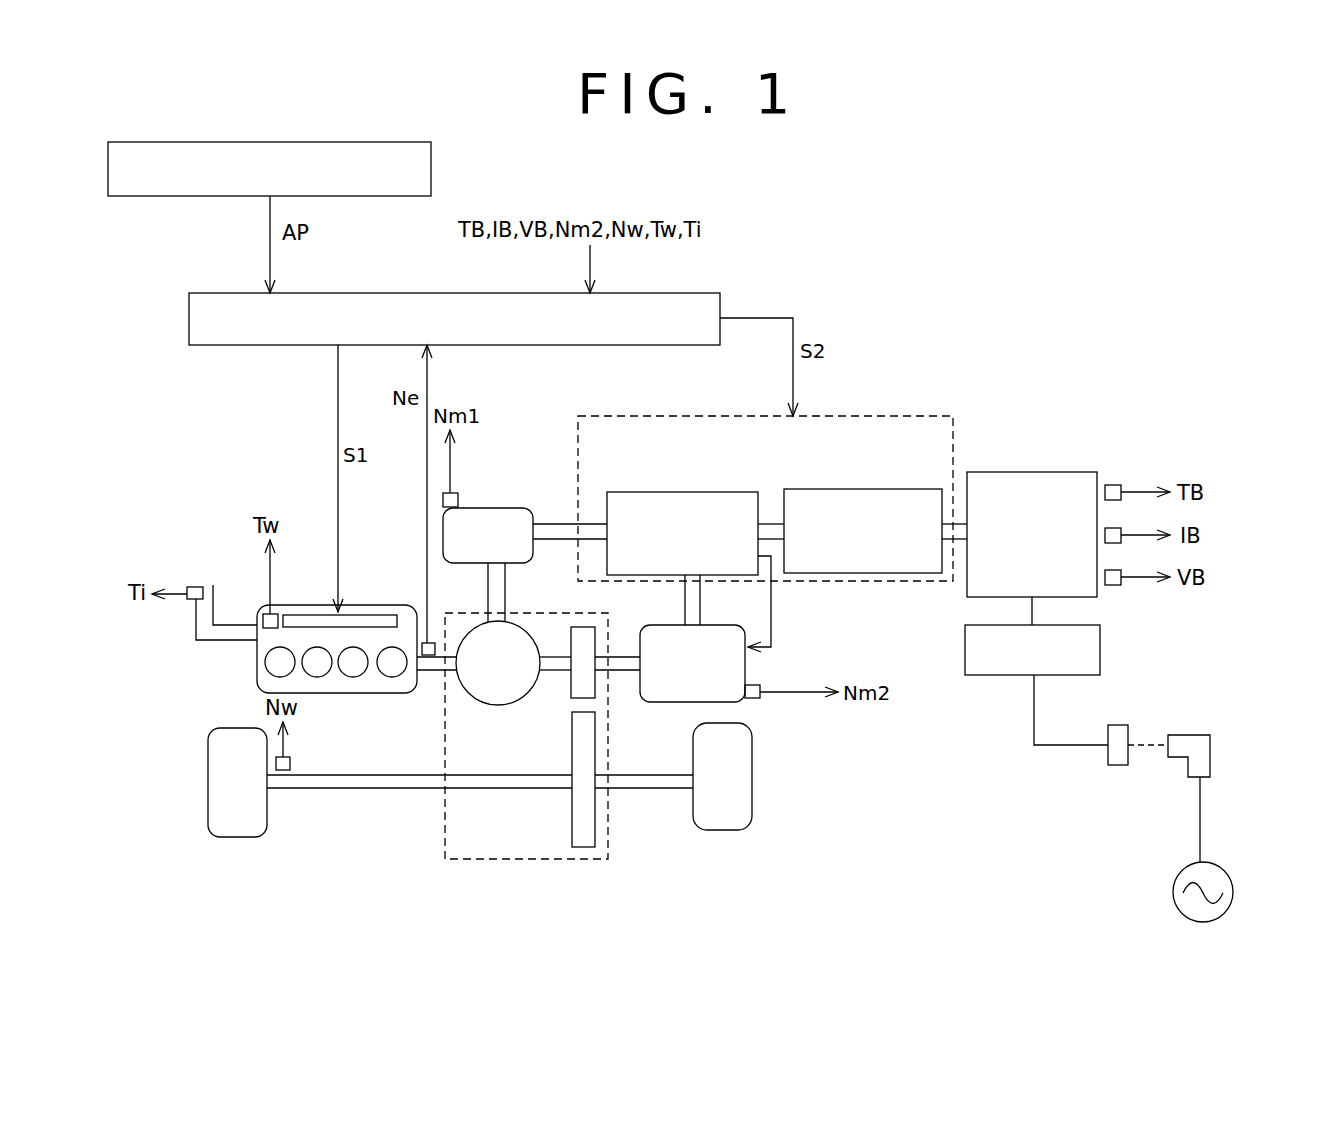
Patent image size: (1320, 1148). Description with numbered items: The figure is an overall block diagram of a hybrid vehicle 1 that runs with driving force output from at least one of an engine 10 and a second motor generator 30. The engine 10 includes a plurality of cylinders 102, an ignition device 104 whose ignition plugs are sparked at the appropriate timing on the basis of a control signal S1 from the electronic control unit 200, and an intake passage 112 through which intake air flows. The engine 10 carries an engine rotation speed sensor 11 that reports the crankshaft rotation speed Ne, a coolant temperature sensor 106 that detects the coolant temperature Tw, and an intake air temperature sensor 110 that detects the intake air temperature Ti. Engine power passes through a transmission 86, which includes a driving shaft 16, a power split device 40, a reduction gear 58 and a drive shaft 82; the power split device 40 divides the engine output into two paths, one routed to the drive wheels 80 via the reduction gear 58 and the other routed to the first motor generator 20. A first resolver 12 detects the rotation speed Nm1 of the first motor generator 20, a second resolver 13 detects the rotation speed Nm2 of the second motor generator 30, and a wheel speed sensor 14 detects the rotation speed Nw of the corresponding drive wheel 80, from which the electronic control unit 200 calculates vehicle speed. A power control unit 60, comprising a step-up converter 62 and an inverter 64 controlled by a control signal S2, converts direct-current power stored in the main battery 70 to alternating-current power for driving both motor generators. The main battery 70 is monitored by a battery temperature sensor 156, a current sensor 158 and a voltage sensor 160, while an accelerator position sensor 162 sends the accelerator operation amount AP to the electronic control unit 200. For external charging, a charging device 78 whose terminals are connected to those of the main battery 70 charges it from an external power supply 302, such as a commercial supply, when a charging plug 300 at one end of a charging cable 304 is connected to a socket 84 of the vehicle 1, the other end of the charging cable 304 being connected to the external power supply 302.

The vehicle 1 is at (966, 197).
The engine 10 is at (292, 650).
The engine rotation speed sensor 11 is at (427, 680).
The first resolver 12 is at (456, 493).
The second resolver 13 is at (752, 698).
The wheel speed sensor 14 is at (290, 765).
The driving shaft 16 is at (560, 672).
The first motor generator 20 is at (515, 508).
The second motor generator 30 is at (745, 668).
The power split device 40 is at (497, 705).
The reduction gear 58 is at (600, 713).
The power control unit 60 is at (935, 416).
The step-up converter 62 is at (870, 489).
The inverter 64 is at (690, 492).
The main battery 70 is at (1052, 472).
The charging device 78 is at (1048, 675).
The drive wheels 80 is at (240, 837).
The drive shaft 82 is at (495, 788).
The socket 84 is at (1108, 752).
The transmission 86 is at (565, 862).
The cylinders 102 is at (265, 672).
The ignition device 104 is at (358, 612).
The coolant temperature sensor 106 is at (273, 612).
The intake air temperature sensor 110 is at (195, 587).
The intake passage 112 is at (196, 620).
The battery temperature sensor 156 is at (1112, 485).
The current sensor 158 is at (1115, 528).
The voltage sensor 160 is at (1112, 585).
The accelerator position sensor 162 is at (348, 142).
The electronic control unit 200 is at (690, 293).
The charging plug 300 is at (1190, 735).
The external power supply 302 is at (1210, 862).
The charging cable 304 is at (1200, 800).